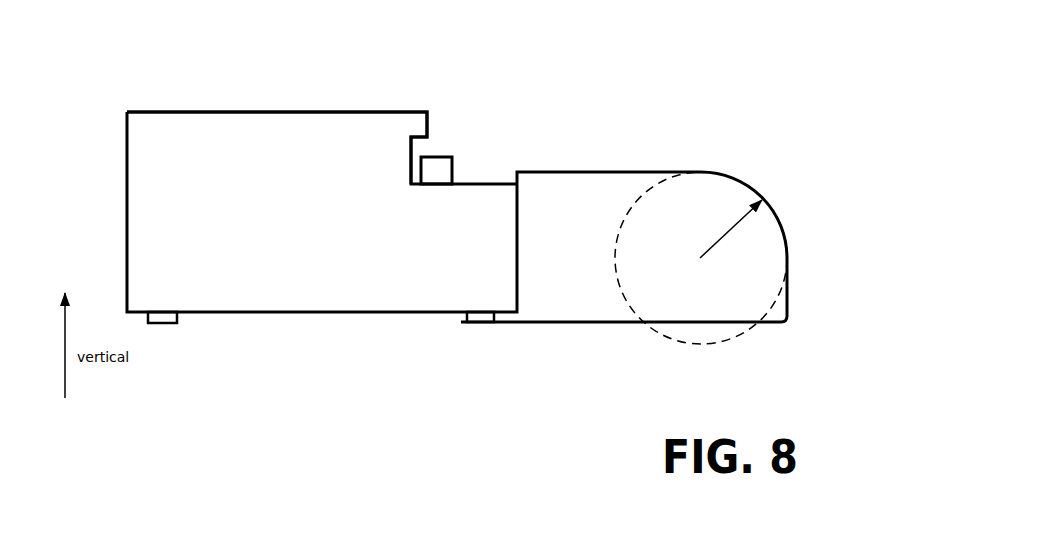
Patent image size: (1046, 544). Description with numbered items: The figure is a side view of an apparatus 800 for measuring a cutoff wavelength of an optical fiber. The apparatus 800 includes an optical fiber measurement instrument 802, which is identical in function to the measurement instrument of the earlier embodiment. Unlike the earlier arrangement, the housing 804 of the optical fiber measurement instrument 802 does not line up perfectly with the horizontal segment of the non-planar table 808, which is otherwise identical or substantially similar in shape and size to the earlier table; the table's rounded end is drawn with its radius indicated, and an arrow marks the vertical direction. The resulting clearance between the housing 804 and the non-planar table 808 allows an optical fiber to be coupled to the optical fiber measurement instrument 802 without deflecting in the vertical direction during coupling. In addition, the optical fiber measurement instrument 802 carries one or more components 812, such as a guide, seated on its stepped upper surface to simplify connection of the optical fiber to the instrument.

The apparatus 800 is at (457, 198).
The optical fiber measurement instrument 802 is at (288, 257).
The housing 804 is at (333, 110).
The non-planar table 808 is at (589, 157).
The component 812 is at (438, 156).